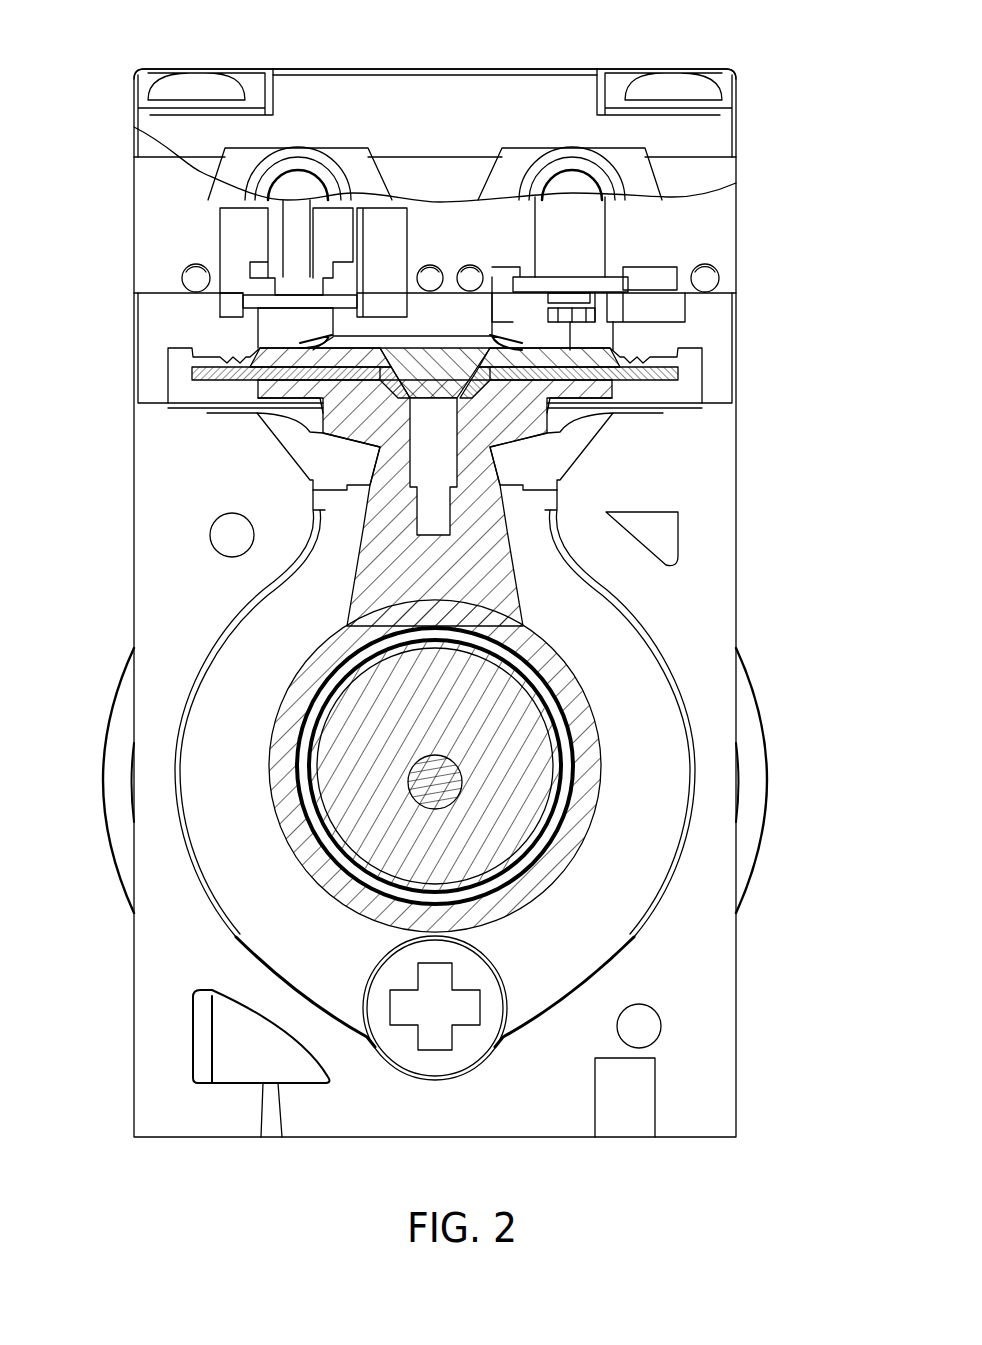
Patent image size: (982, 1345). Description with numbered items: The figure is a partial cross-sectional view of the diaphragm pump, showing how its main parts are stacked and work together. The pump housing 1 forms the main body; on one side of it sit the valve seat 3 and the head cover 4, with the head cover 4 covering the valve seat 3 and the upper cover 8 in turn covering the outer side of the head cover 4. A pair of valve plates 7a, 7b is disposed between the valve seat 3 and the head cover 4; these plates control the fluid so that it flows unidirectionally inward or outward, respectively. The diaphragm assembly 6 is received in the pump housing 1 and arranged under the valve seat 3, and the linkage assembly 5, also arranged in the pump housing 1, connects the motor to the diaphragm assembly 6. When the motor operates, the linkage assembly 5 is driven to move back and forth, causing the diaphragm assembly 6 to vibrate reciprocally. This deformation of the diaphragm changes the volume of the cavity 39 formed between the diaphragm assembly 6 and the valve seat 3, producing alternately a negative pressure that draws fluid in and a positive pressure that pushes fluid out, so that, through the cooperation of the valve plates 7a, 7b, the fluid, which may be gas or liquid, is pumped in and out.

The pump housing 1 is at (118, 526).
The valve seat 3 is at (116, 329).
The head cover 4 is at (104, 189).
The linkage assembly 5 is at (551, 612).
The diaphragm assembly 6 is at (614, 342).
The valve plate 7a is at (605, 266).
The valve plate 7b is at (246, 280).
The upper cover 8 is at (431, 110).
The cavity 39 is at (318, 430).